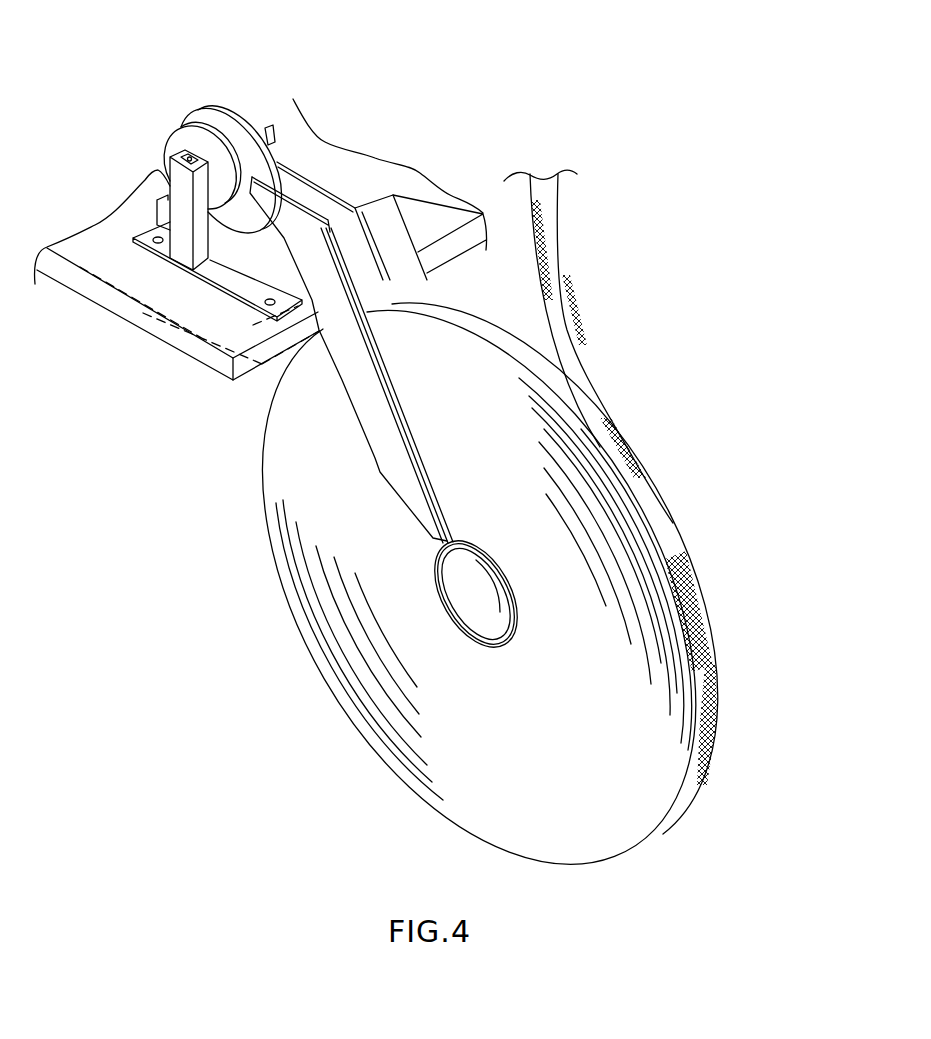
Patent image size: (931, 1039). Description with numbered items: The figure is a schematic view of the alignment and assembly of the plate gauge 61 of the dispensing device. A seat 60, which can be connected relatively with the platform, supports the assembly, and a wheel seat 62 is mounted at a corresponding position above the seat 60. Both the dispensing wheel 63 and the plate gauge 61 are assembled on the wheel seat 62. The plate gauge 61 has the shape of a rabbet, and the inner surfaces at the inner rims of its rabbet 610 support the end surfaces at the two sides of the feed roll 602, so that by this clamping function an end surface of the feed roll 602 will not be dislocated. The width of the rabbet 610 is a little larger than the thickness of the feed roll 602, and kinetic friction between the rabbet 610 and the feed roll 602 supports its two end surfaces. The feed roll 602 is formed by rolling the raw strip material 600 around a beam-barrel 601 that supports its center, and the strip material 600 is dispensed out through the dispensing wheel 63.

The seat 60 is at (187, 307).
The plate gauge 61 is at (372, 187).
The wheel seat 62 is at (262, 120).
The dispensing wheel 63 is at (213, 110).
The rabbet 610 is at (350, 235).
The strip material 600 is at (568, 297).
The beam-barrel 601 is at (440, 610).
The feed roll 602 is at (672, 520).